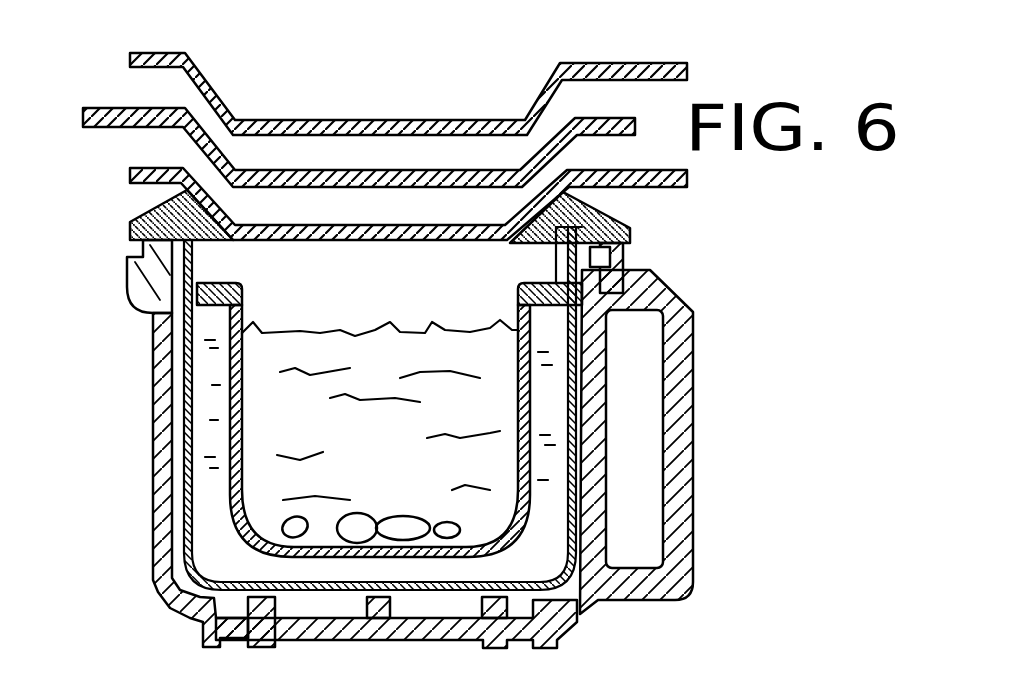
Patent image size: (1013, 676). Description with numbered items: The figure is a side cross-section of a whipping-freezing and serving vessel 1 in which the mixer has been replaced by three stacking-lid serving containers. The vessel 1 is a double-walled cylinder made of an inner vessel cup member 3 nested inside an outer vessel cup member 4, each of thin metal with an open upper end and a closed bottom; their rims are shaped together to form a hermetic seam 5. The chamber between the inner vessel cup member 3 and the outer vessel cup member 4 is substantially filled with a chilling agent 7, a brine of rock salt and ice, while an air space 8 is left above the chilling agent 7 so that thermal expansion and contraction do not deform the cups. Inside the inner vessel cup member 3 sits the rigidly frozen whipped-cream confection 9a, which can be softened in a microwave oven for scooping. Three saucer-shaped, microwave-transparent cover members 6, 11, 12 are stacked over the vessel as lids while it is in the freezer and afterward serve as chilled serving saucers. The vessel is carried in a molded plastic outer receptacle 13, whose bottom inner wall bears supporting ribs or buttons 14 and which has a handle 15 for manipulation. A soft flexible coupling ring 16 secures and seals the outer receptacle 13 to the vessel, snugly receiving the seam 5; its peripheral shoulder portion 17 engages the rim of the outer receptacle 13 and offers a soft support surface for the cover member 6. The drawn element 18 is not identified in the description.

The whipping-freezing and/or serving vessel 1 is at (692, 208).
The inner vessel cup member 3 is at (227, 362).
The outer vessel cup member 4 is at (183, 408).
The seam 5 is at (620, 246).
The cover member 6 is at (122, 178).
The chilling agent 7 is at (212, 480).
The air space 8 is at (208, 298).
The frozen confection 9a is at (440, 495).
The cover member 11 is at (132, 65).
The cover member 12 is at (115, 108).
The outer receptacle 13 is at (165, 430).
The supporting ribs or buttons 14 is at (260, 607).
The handle 15 is at (682, 343).
The coupling ring 16 is at (150, 218).
The peripheral shoulder portion 17 is at (167, 243).
The stones / solids 18 is at (287, 535).